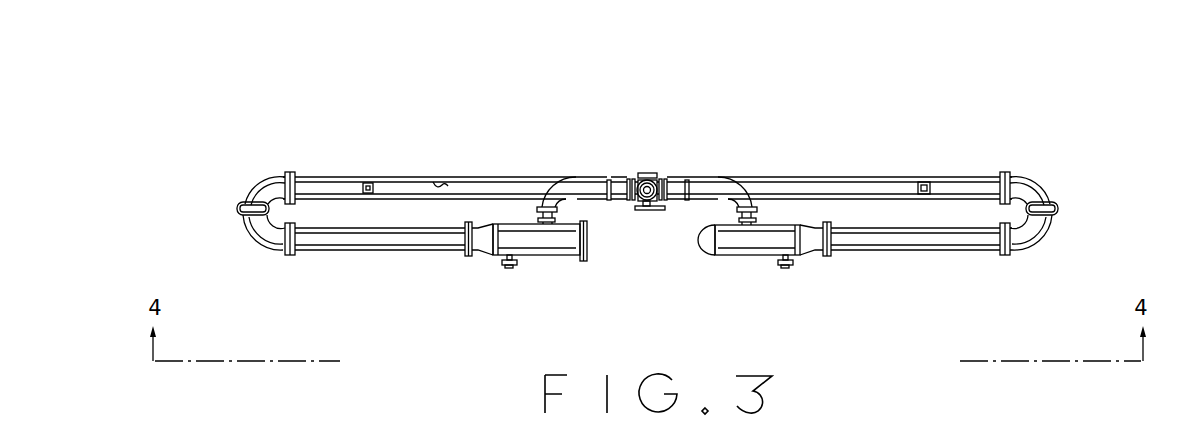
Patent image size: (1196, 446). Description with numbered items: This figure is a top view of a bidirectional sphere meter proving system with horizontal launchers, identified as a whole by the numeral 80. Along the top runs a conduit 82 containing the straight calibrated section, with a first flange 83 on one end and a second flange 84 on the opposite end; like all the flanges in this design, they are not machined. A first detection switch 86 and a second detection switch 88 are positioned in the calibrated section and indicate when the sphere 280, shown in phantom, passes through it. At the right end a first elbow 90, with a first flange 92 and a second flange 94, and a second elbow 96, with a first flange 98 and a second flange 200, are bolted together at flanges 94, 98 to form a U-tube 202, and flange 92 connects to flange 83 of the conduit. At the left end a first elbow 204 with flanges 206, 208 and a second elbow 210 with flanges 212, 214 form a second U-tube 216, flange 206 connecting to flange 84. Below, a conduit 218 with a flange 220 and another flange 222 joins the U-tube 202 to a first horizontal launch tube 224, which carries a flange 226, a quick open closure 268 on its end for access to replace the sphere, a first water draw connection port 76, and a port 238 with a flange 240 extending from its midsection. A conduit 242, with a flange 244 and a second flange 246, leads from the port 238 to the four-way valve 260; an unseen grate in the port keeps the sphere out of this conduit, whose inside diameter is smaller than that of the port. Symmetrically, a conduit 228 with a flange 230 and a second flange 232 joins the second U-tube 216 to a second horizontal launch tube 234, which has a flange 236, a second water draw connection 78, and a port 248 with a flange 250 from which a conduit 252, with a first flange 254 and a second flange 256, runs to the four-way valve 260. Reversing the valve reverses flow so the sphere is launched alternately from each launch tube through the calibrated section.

The bidirectional sphere meter proving system 80 is at (972, 90).
The conduit 82 is at (482, 177).
The first flange 83 is at (1000, 176).
The second flange 84 is at (297, 176).
The first detection switch 86 is at (888, 176).
The second detection switch 88 is at (399, 177).
The first elbow 90 is at (1042, 181).
The first flange 92 is at (1010, 177).
The second flange 94 is at (1056, 203).
The second elbow 96 is at (1040, 235).
The first flange 98 is at (1057, 220).
The second flange 200 is at (1014, 254).
The U-tube 202 is at (1068, 176).
The first elbow 204 is at (254, 177).
The first flange 206 is at (286, 172).
The second flange 208 is at (243, 192).
The second elbow 210 is at (251, 252).
The first flange 212 is at (238, 208).
The second flange 214 is at (276, 256).
The second U-tube 216 is at (240, 241).
The conduit 218 is at (889, 252).
The flange 220 is at (991, 251).
The flange 222 is at (838, 254).
The first horizontal launch tube 224 is at (757, 250).
The flange 226 is at (828, 258).
The conduit 228 is at (385, 251).
The flange 230 is at (294, 255).
The second flange 232 is at (460, 252).
The second horizontal launch tube 234 is at (560, 246).
The flange 236 is at (490, 254).
The port 238 is at (714, 256).
The flange 240 is at (737, 212).
The conduit 242 is at (723, 177).
The flange 244 is at (767, 190).
The second flange 246 is at (698, 177).
The port 248 is at (558, 216).
The flange 250 is at (540, 220).
The conduit 252 is at (562, 177).
The first flange 254 is at (530, 177).
The second flange 256 is at (600, 177).
The 4-way valve 260 is at (647, 292).
The quick open closure 268 is at (700, 252).
The sphere 280 is at (432, 178).
The first water draw connection port 76 is at (786, 268).
The second water draw connection 78 is at (507, 268).